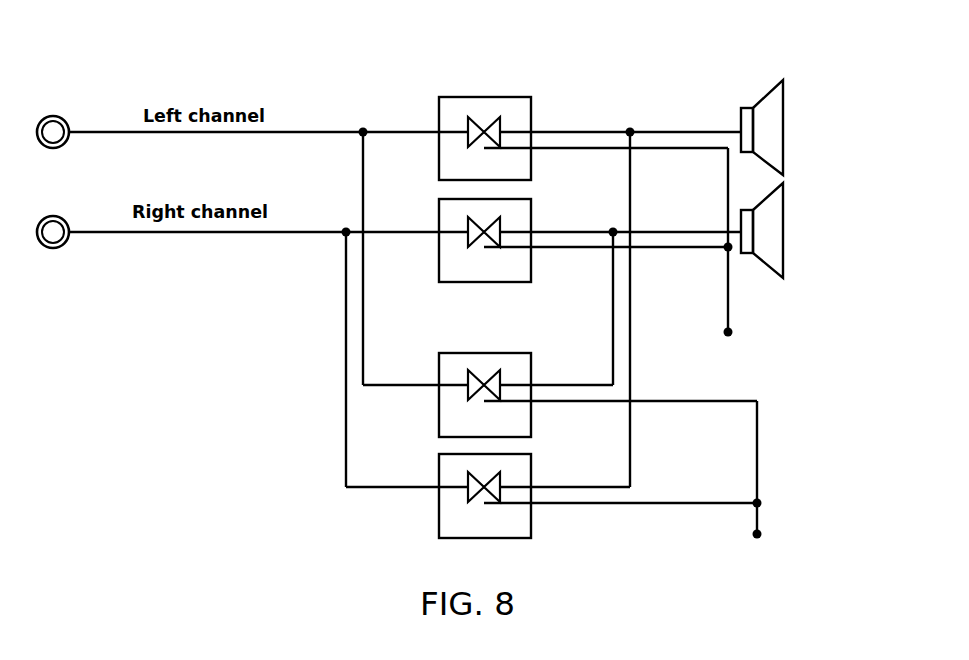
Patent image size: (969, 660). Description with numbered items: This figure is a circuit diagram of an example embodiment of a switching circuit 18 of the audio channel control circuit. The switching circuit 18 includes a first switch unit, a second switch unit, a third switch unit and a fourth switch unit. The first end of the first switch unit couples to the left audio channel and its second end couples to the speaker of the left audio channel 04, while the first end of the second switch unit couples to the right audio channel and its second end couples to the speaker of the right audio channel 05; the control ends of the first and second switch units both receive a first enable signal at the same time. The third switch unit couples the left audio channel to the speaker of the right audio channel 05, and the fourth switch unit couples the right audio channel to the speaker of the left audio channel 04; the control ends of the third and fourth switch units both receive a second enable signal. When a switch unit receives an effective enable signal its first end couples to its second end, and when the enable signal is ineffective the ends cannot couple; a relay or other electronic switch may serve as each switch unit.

The switching circuit 18 is at (500, 49).
The speaker of the left audio channel 04 is at (768, 95).
The speaker of the right audio channel 05 is at (773, 272).